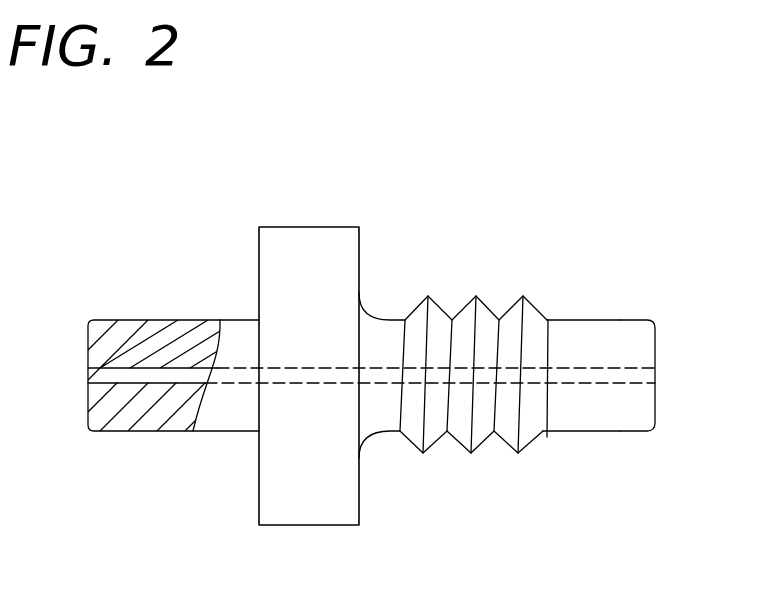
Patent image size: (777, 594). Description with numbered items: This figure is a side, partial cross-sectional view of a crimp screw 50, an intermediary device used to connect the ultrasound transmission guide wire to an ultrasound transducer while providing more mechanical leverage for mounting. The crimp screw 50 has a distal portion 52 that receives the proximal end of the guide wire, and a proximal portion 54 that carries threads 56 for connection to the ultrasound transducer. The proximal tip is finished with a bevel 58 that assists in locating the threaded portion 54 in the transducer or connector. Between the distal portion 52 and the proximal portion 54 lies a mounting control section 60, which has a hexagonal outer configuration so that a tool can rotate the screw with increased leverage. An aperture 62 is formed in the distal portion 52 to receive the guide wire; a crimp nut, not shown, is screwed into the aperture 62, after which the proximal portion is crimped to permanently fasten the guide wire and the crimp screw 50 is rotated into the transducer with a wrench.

The crimp screw 50 is at (585, 156).
The distal portion 52 is at (124, 320).
The proximal portion 54 is at (586, 320).
The threads 56 is at (476, 296).
The bevel 58 is at (647, 318).
The mounting control section 60 is at (308, 227).
The aperture 62 is at (88, 388).